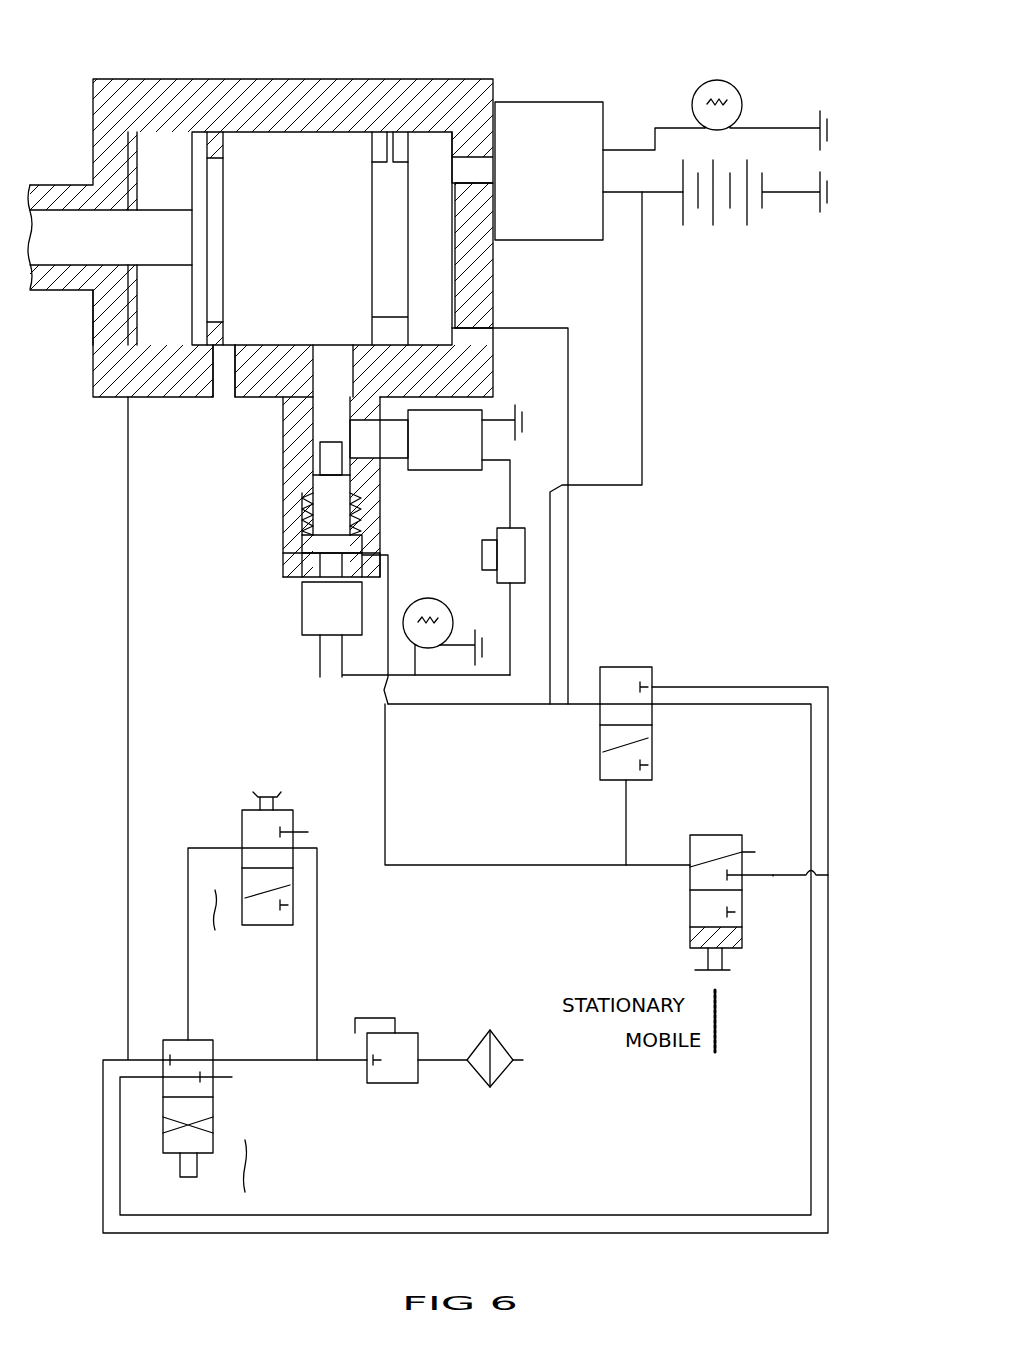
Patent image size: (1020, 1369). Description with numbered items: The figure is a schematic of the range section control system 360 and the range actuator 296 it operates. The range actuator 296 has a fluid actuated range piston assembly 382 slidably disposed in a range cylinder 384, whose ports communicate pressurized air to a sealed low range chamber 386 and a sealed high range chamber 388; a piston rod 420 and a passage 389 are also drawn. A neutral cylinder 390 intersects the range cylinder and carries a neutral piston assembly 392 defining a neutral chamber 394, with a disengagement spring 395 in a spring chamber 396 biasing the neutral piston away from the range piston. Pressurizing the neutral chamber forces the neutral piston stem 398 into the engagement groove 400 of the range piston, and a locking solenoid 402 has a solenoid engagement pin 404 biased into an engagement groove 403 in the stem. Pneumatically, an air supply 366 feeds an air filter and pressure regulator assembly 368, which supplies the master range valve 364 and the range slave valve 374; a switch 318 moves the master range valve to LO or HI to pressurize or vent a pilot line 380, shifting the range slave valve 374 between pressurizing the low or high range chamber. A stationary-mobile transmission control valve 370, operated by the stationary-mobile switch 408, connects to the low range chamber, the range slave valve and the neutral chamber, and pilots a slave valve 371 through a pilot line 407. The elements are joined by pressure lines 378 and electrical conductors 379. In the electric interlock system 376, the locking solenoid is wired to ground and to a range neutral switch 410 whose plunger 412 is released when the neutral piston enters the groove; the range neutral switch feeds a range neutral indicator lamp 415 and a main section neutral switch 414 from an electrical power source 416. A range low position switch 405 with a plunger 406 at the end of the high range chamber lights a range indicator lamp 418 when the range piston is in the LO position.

The range actuator 296 is at (292, 79).
The range piston assembly 382 is at (322, 238).
The range cylinder 384 is at (172, 138).
The low range chamber 386 is at (93, 296).
The high range chamber 388 is at (457, 315).
The channel 389 is at (213, 400).
The neutral cylinder 390 is at (313, 467).
The neutral piston assembly 392 is at (300, 542).
The neutral chamber 394 is at (295, 560).
The disengagement spring 395 is at (290, 505).
The spring chamber 396 is at (300, 522).
The neutral piston stem 398 is at (313, 418).
The engagement groove 400 is at (390, 157).
The locking solenoid 402 is at (477, 466).
The engagement groove 403 is at (313, 447).
The solenoid engagement pin 404 is at (379, 439).
The range low position switch 405 is at (600, 171).
The plunger 406 is at (473, 157).
The pilot line 407 is at (626, 812).
The stationary-mobile switch 408 is at (690, 965).
The range neutral switch 410 is at (300, 606).
The plunger 412 is at (300, 595).
The main section neutral switch 414 is at (503, 528).
The range neutral indicator lamp 415 is at (435, 600).
The electrical power source 416 is at (713, 227).
The range indicator lamp 418 is at (717, 80).
The piston rod 420 is at (111, 237).
The range section control system 360 is at (218, 848).
The master range valve 364 is at (268, 925).
The air supply 366 is at (515, 1073).
The air filter and pressure regulator assembly 368 is at (366, 1083).
The stationary-mobile transmission control valve 370 is at (680, 912).
The slave valve 371 is at (655, 735).
The range slave valve 374 is at (213, 1107).
The electric interlock system 376 is at (302, 677).
The pressure lines 378 is at (578, 704).
The electrical conductors 379 is at (623, 150).
The pilot line 380 is at (660, 72).
The switch 318 is at (268, 790).